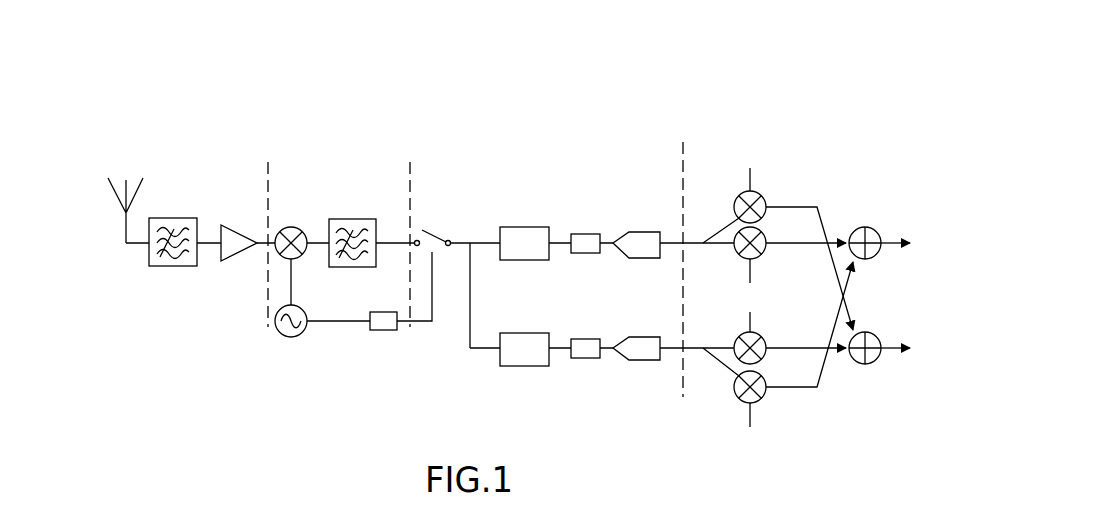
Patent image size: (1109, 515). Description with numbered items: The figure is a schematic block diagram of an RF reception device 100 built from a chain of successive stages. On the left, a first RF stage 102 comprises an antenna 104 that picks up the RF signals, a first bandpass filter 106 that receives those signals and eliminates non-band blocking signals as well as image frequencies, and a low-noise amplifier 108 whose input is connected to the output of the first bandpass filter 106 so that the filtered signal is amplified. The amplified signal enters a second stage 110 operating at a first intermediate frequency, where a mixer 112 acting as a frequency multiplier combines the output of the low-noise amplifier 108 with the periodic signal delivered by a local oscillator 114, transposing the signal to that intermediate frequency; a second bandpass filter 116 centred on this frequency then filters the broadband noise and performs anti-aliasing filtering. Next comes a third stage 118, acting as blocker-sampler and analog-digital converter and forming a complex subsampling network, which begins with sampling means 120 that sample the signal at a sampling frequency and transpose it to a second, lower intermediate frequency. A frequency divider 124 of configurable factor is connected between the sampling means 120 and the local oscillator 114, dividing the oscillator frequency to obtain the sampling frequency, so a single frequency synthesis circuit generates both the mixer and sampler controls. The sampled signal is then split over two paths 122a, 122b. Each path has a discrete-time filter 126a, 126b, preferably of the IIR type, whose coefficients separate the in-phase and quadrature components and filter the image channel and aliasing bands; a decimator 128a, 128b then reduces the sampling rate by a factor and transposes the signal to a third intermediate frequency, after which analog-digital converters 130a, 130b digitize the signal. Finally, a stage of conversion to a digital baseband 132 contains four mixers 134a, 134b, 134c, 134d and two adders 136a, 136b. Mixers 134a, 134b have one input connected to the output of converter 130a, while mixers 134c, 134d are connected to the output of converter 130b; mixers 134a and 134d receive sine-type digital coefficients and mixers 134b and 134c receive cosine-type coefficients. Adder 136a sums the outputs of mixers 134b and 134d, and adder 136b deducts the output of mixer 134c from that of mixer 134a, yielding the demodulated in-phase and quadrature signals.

The RF reception device 100 is at (747, 75).
The first RF stage 102 is at (228, 152).
The antenna 104 is at (135, 193).
The first bandpass filter 106 is at (155, 257).
The low-noise amplifier 108 is at (238, 247).
The second stage 110 is at (350, 152).
The mixer 112 is at (296, 230).
The local oscillator 114 is at (282, 330).
The second bandpass filter 116 is at (348, 260).
The third stage 118 is at (553, 153).
The sampling means 120 is at (433, 230).
The first path 122a is at (628, 153).
The second path 122b is at (612, 442).
The frequency divider 124 is at (388, 324).
The filter 126a is at (513, 237).
The filter 126b is at (518, 353).
The decimator 128a is at (583, 242).
The decimator 128b is at (586, 353).
The analog-digital converter 130a is at (645, 240).
The analog-digital converter 130b is at (650, 352).
The stage of conversion to digital baseband 132 is at (832, 133).
The mixer 134a is at (752, 198).
The mixer 134b is at (752, 253).
The mixer 134c is at (752, 340).
The mixer 134d is at (752, 397).
The adder 136a is at (872, 237).
The adder 136b is at (872, 355).